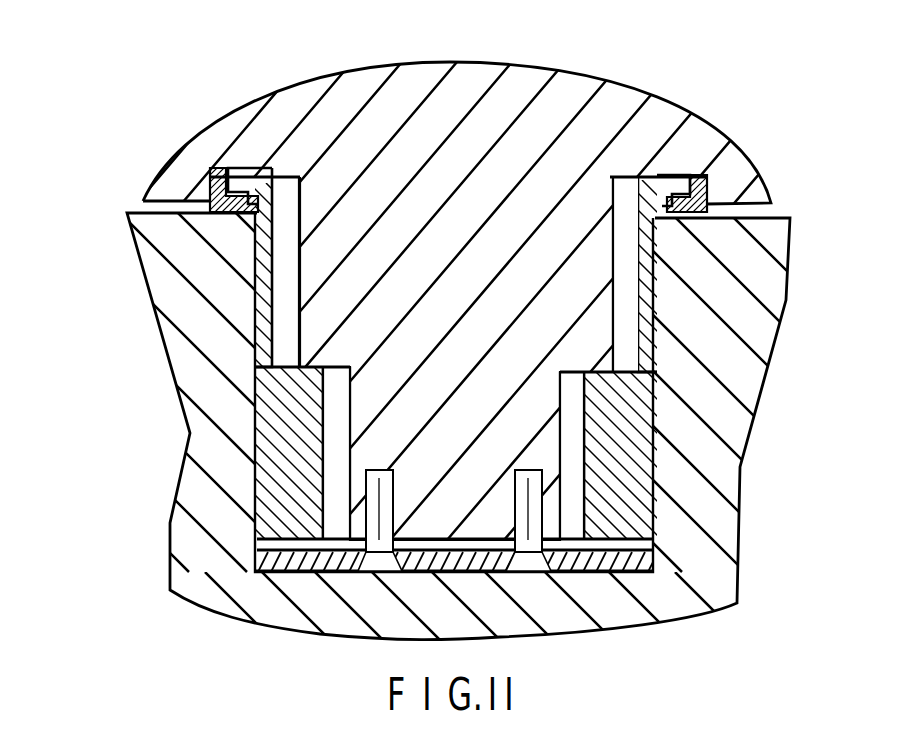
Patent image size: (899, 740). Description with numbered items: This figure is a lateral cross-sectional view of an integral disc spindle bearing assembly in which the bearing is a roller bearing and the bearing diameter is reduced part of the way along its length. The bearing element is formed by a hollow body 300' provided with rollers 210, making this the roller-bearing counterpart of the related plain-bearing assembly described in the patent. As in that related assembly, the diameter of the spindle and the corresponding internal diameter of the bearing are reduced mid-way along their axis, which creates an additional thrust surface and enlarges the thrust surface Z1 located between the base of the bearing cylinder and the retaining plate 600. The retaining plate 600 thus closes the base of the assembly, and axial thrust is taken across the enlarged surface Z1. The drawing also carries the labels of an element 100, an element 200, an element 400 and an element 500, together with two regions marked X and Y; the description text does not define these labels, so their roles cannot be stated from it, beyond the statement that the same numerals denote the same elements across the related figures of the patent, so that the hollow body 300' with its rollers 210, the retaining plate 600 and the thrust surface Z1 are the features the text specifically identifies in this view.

The cap / upper housing 100 is at (585, 122).
The inner member with bent seal hooks 200 is at (708, 199).
The rollers 210 is at (575, 427).
The hollow body 300' is at (449, 357).
The lower body / housing 400 is at (204, 313).
The base plate 500 is at (650, 533).
The retaining plate 600 is at (310, 566).
The left seal region X is at (127, 213).
The right seal region Y is at (669, 179).
The thrust surface Z1 is at (258, 538).